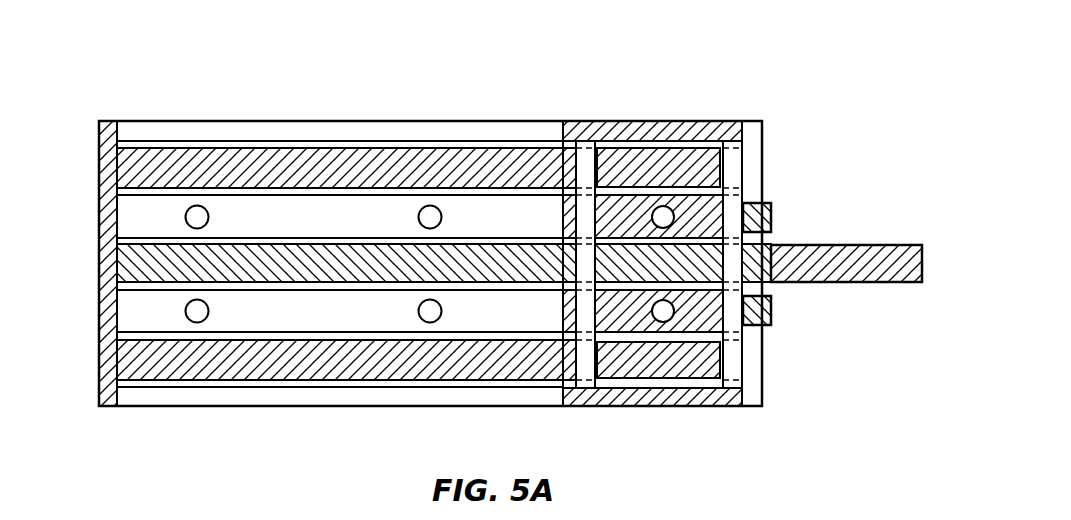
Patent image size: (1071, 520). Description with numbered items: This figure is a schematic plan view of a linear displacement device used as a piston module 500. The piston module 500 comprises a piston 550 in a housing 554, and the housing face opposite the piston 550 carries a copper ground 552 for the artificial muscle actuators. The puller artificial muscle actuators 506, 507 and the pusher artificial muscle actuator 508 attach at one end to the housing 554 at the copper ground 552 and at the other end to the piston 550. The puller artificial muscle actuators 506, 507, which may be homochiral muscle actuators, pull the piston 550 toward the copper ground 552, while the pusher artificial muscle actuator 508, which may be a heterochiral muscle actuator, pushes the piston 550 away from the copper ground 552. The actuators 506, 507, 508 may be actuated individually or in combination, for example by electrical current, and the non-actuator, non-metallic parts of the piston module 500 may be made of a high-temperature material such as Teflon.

The piston module 500 is at (690, 64).
The puller artificial muscle actuator 506 is at (273, 147).
The puller artificial muscle actuator 507 is at (645, 378).
The pusher artificial muscle actuator 508 is at (493, 244).
The piston 550 is at (852, 222).
The copper ground 552 is at (98, 232).
The housing 554 is at (300, 407).